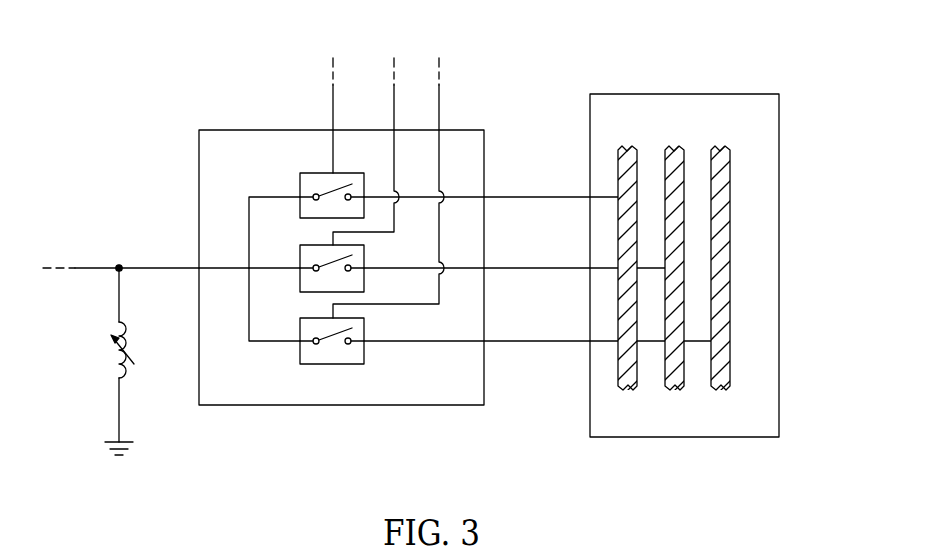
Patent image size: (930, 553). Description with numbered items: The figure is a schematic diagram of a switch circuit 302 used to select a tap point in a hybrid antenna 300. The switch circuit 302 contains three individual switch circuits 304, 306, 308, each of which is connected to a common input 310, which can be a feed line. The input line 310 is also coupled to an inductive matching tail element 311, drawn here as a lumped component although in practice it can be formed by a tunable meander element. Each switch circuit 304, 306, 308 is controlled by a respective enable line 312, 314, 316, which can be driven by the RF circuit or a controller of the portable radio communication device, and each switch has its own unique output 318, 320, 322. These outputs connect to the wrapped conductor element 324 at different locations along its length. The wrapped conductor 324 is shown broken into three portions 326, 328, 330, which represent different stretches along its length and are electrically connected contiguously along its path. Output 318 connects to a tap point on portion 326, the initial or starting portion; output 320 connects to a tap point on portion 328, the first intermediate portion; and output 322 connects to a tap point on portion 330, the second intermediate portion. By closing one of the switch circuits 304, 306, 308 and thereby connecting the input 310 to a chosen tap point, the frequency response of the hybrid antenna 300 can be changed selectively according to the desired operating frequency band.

The hybrid antenna 300 is at (139, 36).
The switch circuit 302 is at (232, 130).
The switch circuit 304 is at (300, 185).
The switch circuit 306 is at (364, 252).
The switch circuit 308 is at (300, 357).
The common input 310 is at (160, 268).
The inductive matching tail element 311 is at (118, 368).
The enable line 312 is at (333, 110).
The enable line 314 is at (394, 107).
The enable line 316 is at (439, 105).
The output 318 is at (533, 197).
The output 320 is at (533, 268).
The output 322 is at (533, 341).
The wrapped conductor element 324 is at (762, 94).
The portion 326 is at (626, 146).
The portion 328 is at (672, 146).
The portion 330 is at (718, 146).